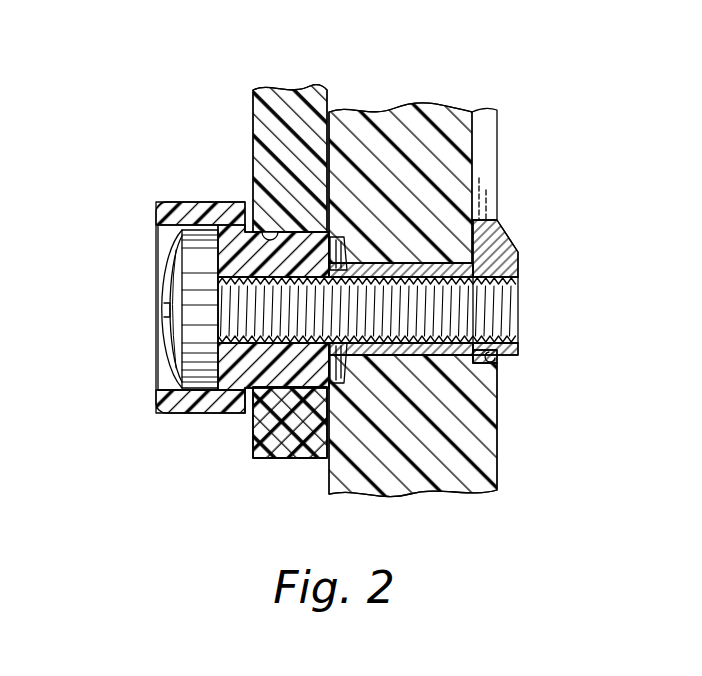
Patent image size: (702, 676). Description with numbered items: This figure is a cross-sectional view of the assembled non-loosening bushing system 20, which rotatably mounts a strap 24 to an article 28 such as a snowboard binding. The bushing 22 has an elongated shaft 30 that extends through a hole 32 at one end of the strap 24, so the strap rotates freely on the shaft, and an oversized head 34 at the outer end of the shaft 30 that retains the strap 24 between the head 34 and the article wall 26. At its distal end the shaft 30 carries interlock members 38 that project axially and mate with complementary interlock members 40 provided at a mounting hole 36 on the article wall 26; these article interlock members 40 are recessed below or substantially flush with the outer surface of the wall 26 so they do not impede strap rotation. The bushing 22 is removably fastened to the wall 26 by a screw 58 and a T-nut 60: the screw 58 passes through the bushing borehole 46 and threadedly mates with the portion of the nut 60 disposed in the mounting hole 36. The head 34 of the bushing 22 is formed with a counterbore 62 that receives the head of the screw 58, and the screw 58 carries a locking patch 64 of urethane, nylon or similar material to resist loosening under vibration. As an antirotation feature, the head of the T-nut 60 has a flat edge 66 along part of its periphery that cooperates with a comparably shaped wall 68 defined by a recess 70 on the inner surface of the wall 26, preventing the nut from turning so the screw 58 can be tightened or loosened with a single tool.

The bushing system 20 is at (269, 268).
The bushing 22 is at (254, 268).
The strap 24 is at (311, 88).
The article wall 26 is at (413, 110).
The article 28 is at (508, 464).
The shaft 30 is at (252, 436).
The hole 32 is at (240, 234).
The head 34 is at (189, 420).
The mounting hole 36 is at (458, 278).
The interlock members 38 is at (340, 248).
The interlock members 40 is at (303, 440).
The borehole 46 is at (231, 240).
The screw 58 is at (147, 299).
The T-nut 60 is at (519, 262).
The counterbore 62 is at (160, 238).
The locking patch 64 is at (508, 305).
The flat edge 66 is at (500, 364).
The wall 68 is at (499, 365).
The recess 70 is at (489, 134).